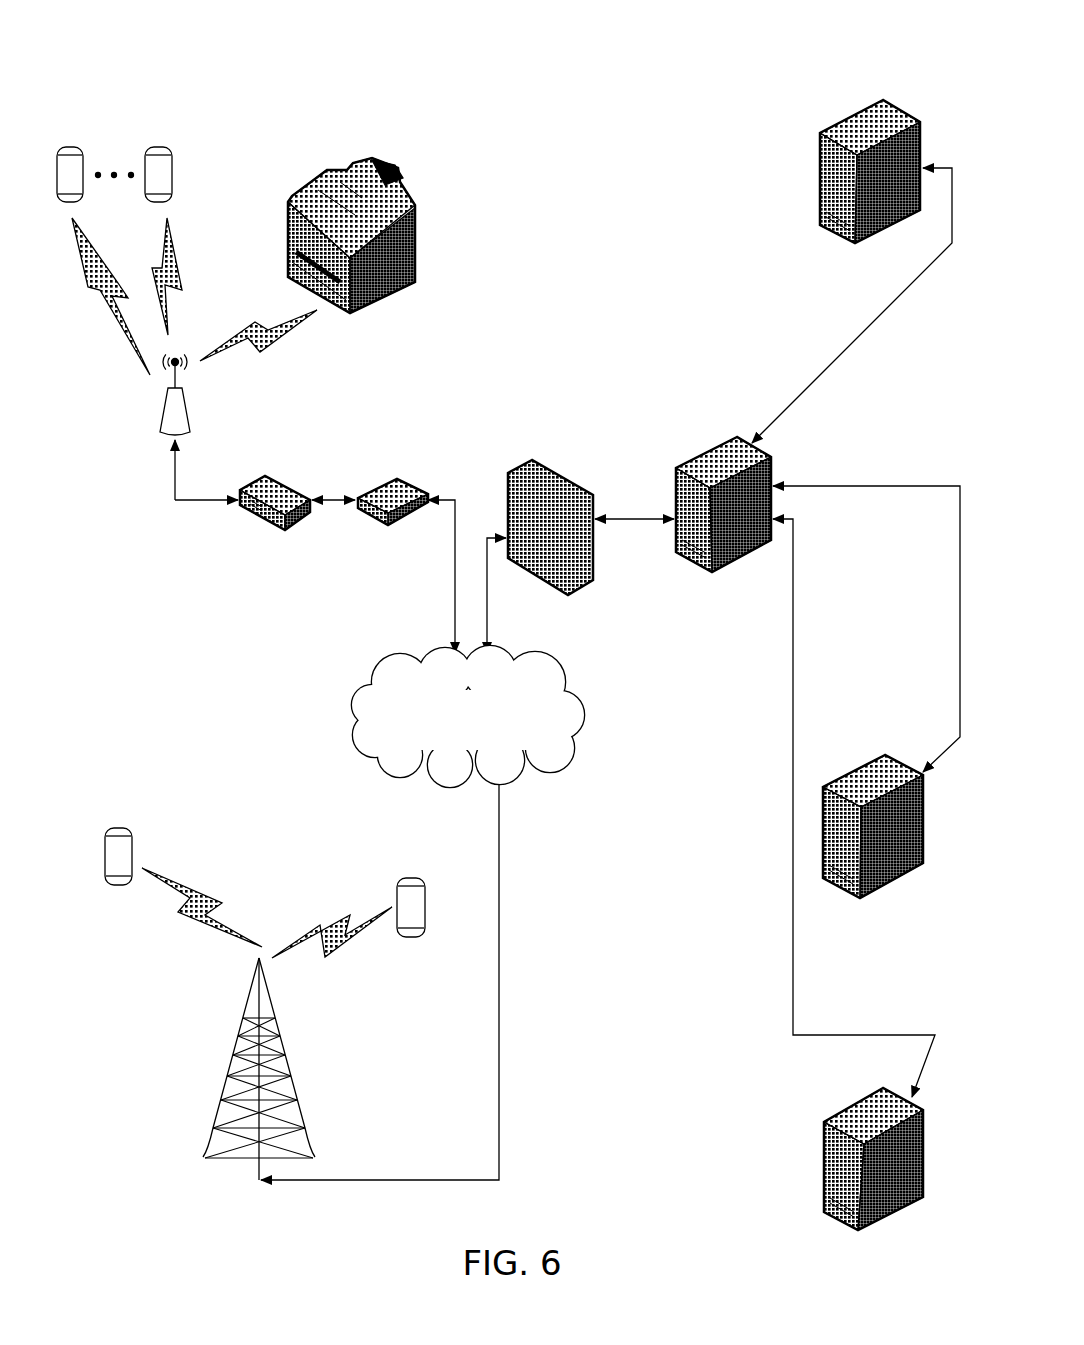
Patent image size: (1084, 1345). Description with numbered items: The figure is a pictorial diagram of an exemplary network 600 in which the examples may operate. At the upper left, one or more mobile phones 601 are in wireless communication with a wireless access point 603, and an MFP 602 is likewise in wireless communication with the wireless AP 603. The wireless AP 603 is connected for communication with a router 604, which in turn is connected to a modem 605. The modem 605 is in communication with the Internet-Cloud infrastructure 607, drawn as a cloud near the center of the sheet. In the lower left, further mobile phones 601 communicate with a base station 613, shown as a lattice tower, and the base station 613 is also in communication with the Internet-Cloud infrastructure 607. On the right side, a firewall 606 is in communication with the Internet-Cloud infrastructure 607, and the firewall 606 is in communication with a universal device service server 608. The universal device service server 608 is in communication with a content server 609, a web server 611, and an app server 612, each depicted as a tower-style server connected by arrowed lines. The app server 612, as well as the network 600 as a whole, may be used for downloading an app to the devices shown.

The network 600 is at (183, 59).
The mobile phone 601 is at (407, 880).
The MFP 602 is at (417, 218).
The wireless access point 603 is at (185, 397).
The router 604 is at (257, 520).
The modem 605 is at (385, 527).
The firewall 606 is at (548, 470).
The Internet-Cloud infrastructure 607 is at (468, 716).
The universal device service server 608 is at (732, 435).
The content server 609 is at (820, 142).
The web server 611 is at (883, 753).
The app server 612 is at (823, 1120).
The base station 613 is at (282, 1077).